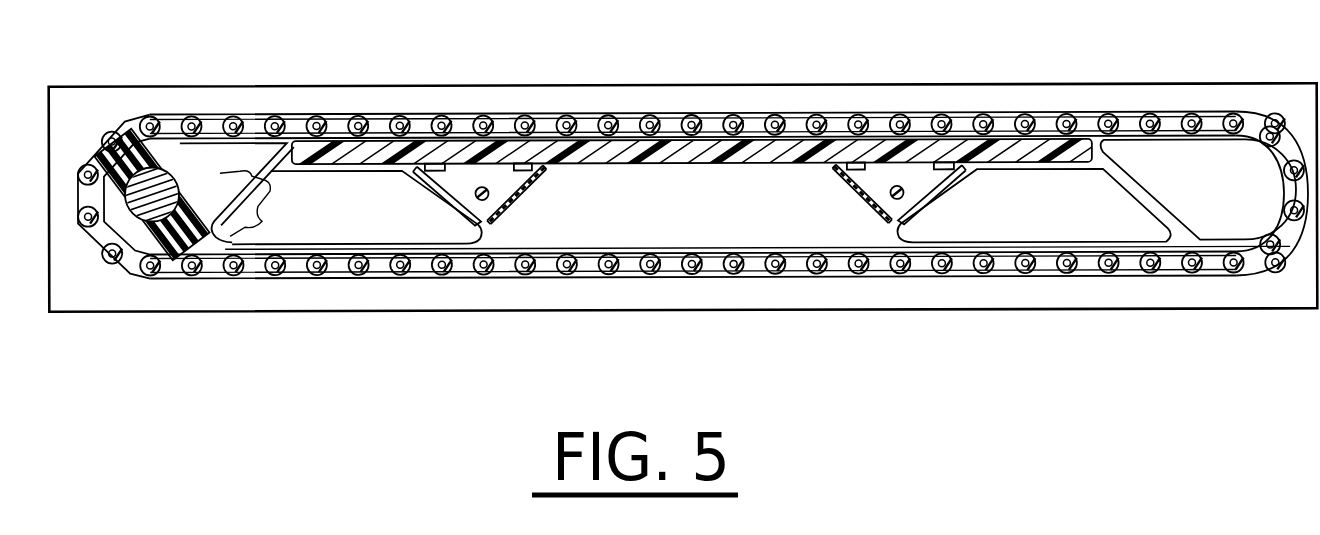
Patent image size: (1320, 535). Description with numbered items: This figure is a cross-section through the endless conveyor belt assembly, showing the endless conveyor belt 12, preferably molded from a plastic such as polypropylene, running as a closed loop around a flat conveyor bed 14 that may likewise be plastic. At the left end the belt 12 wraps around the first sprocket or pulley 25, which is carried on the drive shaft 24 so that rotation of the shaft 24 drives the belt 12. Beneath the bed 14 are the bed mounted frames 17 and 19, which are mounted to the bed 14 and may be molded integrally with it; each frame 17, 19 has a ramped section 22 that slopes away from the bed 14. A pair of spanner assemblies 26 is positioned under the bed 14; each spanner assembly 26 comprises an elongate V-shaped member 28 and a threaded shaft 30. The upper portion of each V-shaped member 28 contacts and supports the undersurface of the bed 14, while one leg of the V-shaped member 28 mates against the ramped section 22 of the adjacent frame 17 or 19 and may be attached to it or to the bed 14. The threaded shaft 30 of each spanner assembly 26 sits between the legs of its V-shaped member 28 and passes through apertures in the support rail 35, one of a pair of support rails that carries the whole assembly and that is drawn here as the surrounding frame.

The endless conveyor belt 12 is at (258, 115).
The conveyor bed 14 is at (683, 150).
The bed mounted frame 17 is at (330, 214).
The bed mounted frame 19 is at (1087, 200).
The ramped section 22 is at (432, 183).
The drive shaft 24 is at (143, 170).
The first sprocket or pulley 25 is at (243, 188).
The spanner assembly 26 is at (508, 214).
The V-shaped member 28 is at (543, 167).
The threaded shaft 30 is at (515, 192).
The support rail 35 is at (1120, 92).